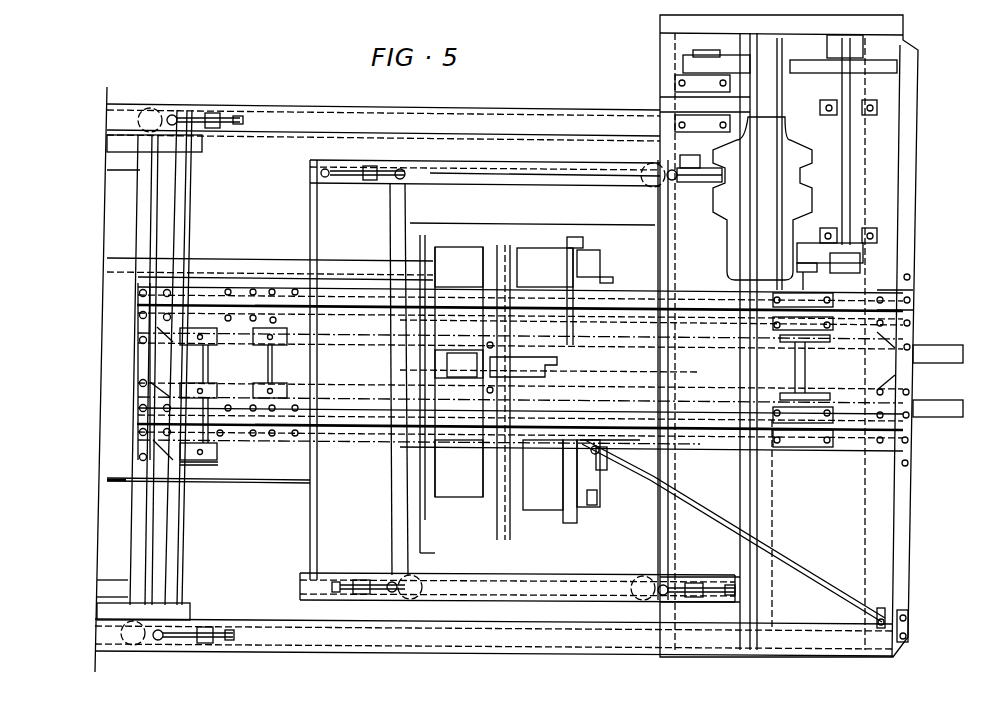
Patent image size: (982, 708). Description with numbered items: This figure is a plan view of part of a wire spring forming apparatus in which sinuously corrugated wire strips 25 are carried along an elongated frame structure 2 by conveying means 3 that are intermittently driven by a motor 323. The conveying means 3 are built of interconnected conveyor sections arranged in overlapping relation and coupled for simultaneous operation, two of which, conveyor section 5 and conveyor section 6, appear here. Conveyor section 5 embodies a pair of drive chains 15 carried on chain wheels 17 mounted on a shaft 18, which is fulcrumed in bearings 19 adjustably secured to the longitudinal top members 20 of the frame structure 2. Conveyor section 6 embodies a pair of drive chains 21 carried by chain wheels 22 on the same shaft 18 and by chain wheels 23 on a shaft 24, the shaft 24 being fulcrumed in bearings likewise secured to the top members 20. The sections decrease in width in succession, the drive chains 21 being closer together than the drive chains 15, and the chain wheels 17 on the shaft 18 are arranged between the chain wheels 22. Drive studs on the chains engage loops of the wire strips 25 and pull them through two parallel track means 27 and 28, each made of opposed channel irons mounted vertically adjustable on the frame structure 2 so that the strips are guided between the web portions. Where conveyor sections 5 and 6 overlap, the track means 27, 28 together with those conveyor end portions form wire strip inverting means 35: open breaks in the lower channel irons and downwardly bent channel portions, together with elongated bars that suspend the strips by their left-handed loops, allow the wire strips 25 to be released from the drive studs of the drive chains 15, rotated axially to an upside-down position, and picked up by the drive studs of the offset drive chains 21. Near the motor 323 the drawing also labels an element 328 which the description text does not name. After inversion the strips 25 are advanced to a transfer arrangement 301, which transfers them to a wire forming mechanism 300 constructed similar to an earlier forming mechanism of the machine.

The frame structure 2 is at (268, 652).
The conveying means 3 is at (718, 402).
The conveyor section 5 is at (135, 268).
The conveyor section 6 is at (696, 398).
The drive chains 15 is at (173, 280).
The chain wheels 17 is at (222, 273).
The shaft 18 is at (210, 362).
The bearings 19 is at (247, 283).
The longitudinal top members 20 is at (347, 290).
The drive chains 21 is at (642, 333).
The chain wheels 22 is at (225, 392).
The chain wheels 23 is at (818, 347).
The shaft 24 is at (773, 298).
The wire strips 25 is at (516, 390).
The track means 27 is at (610, 350).
The track means 28 is at (623, 390).
The wire strip inverting means 35 is at (208, 258).
The wire forming mechanism 300 is at (523, 512).
The transfer arrangement 301 is at (490, 350).
The motor 323 is at (806, 170).
The adjusting bolt 328 is at (665, 160).